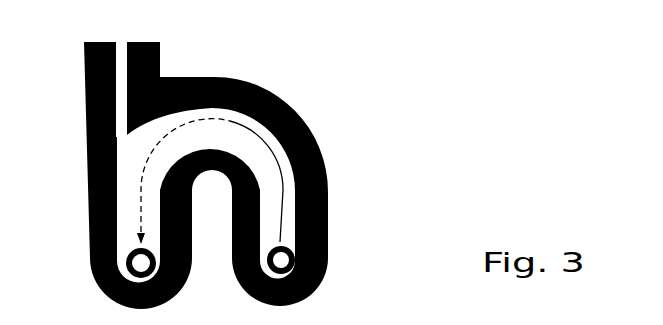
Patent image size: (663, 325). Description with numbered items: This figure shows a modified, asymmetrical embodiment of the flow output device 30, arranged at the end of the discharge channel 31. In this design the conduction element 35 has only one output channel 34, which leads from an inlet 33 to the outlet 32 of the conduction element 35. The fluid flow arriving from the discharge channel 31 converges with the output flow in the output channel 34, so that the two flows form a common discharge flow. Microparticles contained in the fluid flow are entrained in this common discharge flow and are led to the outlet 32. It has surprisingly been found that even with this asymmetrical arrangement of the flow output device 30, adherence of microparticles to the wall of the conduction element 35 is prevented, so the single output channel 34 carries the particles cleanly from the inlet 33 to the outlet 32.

The flow output device 30 is at (372, 161).
The discharge channel 31 is at (124, 75).
The outlet 32 is at (105, 274).
The inlet 33 is at (328, 258).
The output channel 34 is at (265, 135).
The conduction element 35 is at (128, 194).